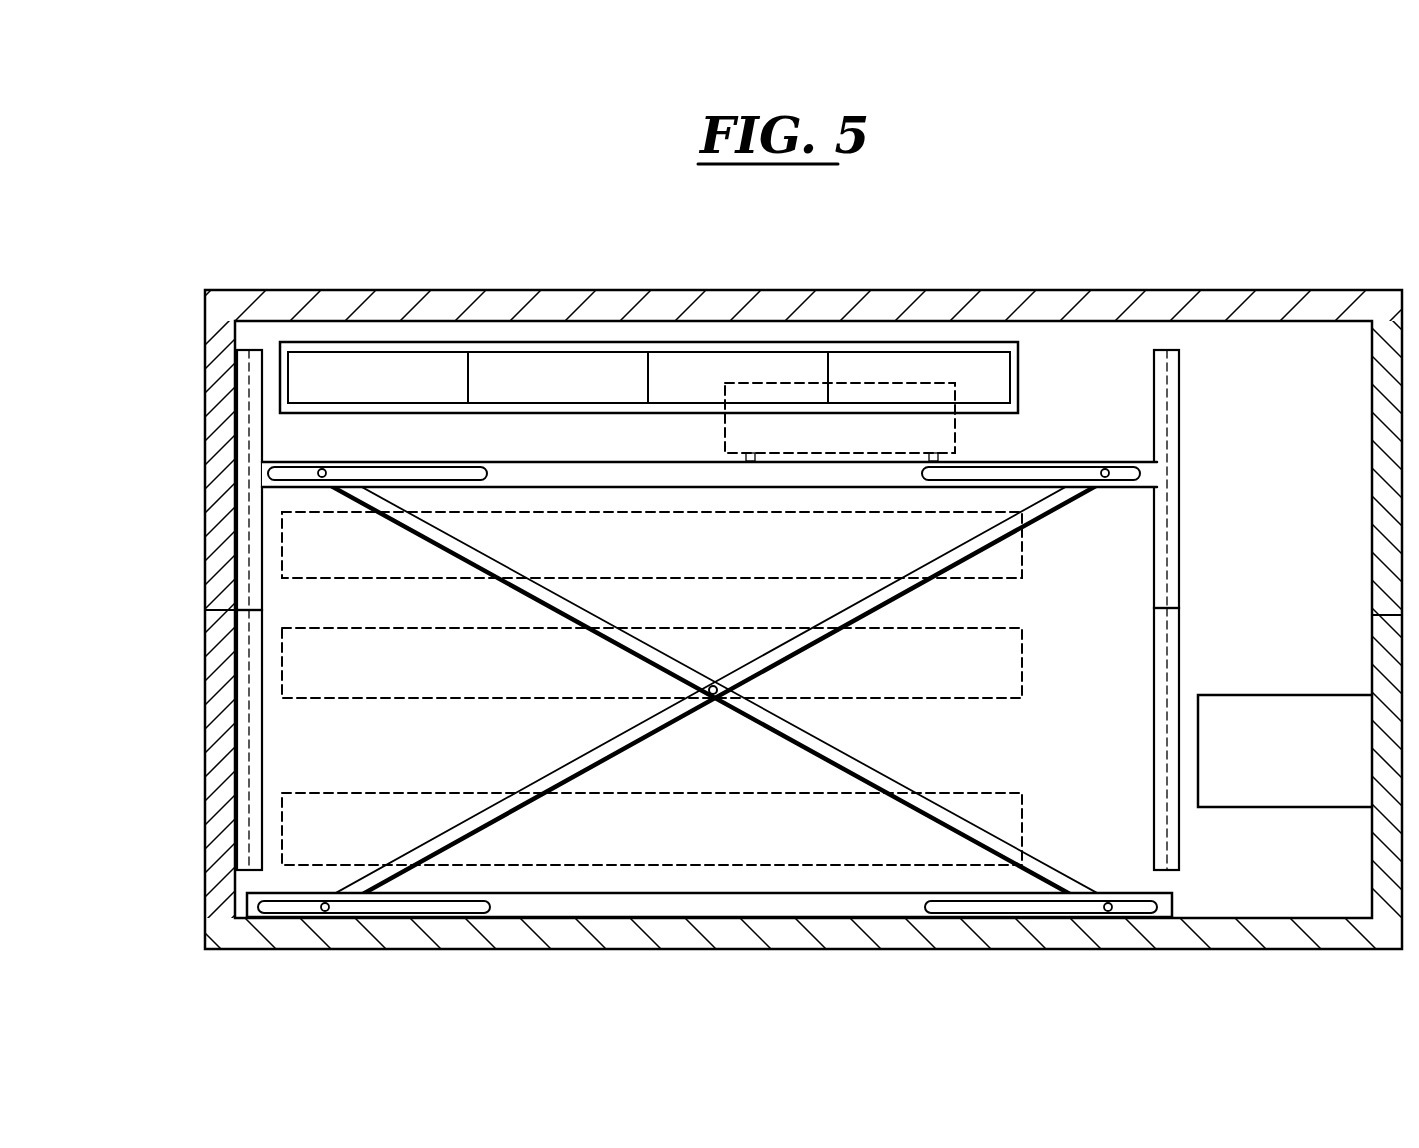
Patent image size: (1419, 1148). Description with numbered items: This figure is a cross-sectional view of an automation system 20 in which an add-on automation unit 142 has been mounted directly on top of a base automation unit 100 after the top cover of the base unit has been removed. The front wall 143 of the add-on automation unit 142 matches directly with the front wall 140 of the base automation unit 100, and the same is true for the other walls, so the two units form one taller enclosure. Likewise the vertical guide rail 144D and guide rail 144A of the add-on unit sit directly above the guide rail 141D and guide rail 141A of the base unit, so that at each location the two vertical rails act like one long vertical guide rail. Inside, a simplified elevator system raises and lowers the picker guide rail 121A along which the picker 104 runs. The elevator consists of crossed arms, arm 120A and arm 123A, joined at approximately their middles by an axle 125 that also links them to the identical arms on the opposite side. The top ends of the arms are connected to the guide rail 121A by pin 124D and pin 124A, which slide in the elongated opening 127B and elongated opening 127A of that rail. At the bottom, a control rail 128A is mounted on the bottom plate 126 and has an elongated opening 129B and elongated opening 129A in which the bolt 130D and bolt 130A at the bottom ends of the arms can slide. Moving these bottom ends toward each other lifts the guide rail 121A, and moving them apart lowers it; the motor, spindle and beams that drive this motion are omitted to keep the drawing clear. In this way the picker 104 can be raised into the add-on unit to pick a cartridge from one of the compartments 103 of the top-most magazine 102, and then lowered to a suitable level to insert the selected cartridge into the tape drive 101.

The automation system 20 is at (155, 536).
The base automation unit 100 is at (195, 797).
The tape drive 101 is at (1330, 720).
The magazine 102 is at (279, 373).
The compartments 103 is at (392, 366).
The picker 104 is at (955, 437).
The arm 120A is at (558, 590).
The picker guide rail 121A is at (670, 470).
The arm 123A is at (563, 775).
The pin 124A is at (1105, 478).
The pin 124D is at (322, 469).
The axle 125 is at (713, 695).
The bottom plate 126 is at (565, 925).
The elongated opening 127A is at (957, 472).
The elongated opening 127B is at (440, 478).
The control rail 128A is at (772, 898).
The elongated opening 129A is at (985, 903).
The elongated opening 129B is at (270, 905).
The bolt 130A is at (1108, 900).
The bolt 130D is at (327, 909).
The front wall 140 is at (215, 642).
The guide rail 141A is at (1168, 657).
The guide rail 141D is at (256, 728).
The add-on automation unit 142 is at (196, 477).
The front wall 143 is at (222, 407).
The guide rail 144A is at (1168, 407).
The guide rail 144D is at (248, 440).